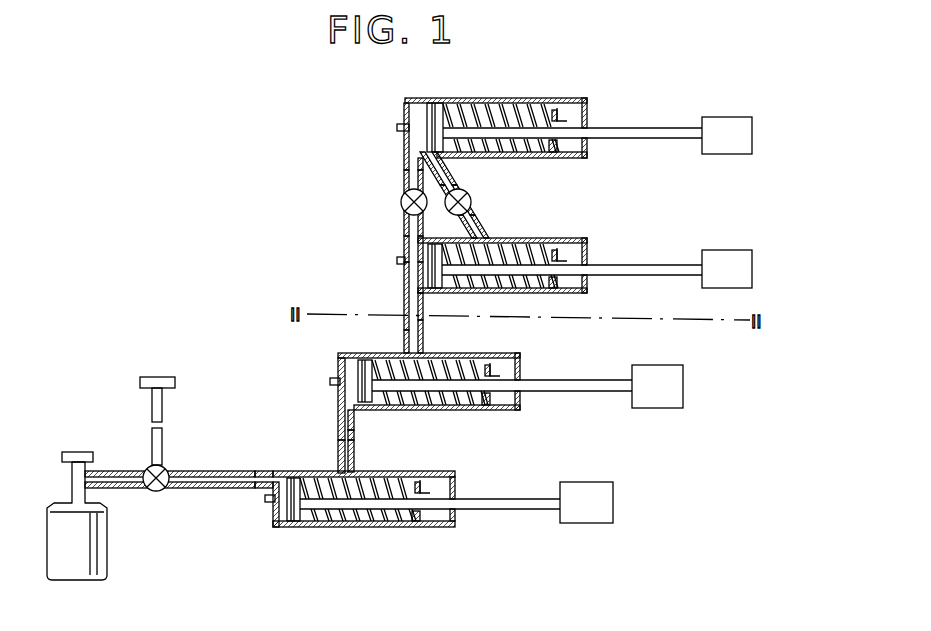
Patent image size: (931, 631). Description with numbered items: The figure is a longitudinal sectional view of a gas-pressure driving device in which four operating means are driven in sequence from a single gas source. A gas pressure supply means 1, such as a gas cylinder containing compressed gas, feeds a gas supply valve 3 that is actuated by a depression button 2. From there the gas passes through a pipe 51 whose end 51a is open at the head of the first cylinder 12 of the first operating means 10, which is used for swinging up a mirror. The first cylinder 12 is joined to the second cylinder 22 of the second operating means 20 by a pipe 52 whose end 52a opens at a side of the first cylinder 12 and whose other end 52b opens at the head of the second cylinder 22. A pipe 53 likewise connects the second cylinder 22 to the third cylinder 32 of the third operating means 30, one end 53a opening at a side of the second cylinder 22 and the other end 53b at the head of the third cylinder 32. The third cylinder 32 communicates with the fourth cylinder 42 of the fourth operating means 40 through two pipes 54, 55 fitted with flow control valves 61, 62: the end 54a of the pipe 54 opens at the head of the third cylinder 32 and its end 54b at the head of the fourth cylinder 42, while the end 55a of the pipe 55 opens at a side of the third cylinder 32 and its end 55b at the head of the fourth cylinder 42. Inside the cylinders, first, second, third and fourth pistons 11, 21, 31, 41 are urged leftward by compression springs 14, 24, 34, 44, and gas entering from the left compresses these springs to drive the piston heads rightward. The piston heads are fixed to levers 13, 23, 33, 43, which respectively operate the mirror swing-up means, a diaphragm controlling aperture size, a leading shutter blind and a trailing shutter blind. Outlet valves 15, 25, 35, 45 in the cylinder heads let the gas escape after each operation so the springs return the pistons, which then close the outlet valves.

The gas pressure supply means 1 is at (95, 553).
The depression button 2 is at (164, 382).
The gas supply valve 3 is at (157, 492).
The first operating means 10 is at (325, 534).
The first piston 11 is at (292, 523).
The first cylinder 12 is at (365, 525).
The lever 13 is at (588, 492).
The compression spring 14 is at (419, 524).
The outlet valve 15 is at (266, 500).
The second operating means 20 is at (455, 413).
The second piston 21 is at (362, 362).
The second cylinder 22 is at (474, 411).
The lever 23 is at (656, 372).
The compression spring 24 is at (489, 396).
The outlet valve 25 is at (333, 380).
The third operating means 30 is at (508, 298).
The third piston 31 is at (436, 246).
The third cylinder 32 is at (533, 289).
The lever 33 is at (722, 258).
The compression spring 34 is at (560, 250).
The outlet valve 35 is at (399, 261).
The fourth operating means 40 is at (516, 160).
The fourth piston 41 is at (436, 103).
The fourth cylinder 42 is at (495, 103).
The lever 43 is at (722, 125).
The compression spring 44 is at (560, 118).
The outlet valve 45 is at (402, 124).
The pipe 51 is at (216, 489).
The end of pipe 51a is at (277, 471).
The pipe 52 is at (354, 446).
The end of pipe 52a is at (336, 468).
The end of pipe 52b is at (350, 410).
The pipe 53 is at (409, 306).
The end of pipe 53a is at (418, 352).
The end of pipe 53b is at (422, 300).
The pipe 54 is at (408, 224).
The end of pipe 54a is at (409, 244).
The end of pipe 54b is at (410, 152).
The pipe 55 is at (478, 230).
The end of pipe 55a is at (488, 238).
The end of pipe 55b is at (441, 168).
The flow control valve 61 is at (402, 198).
The flow control valve 62 is at (470, 200).